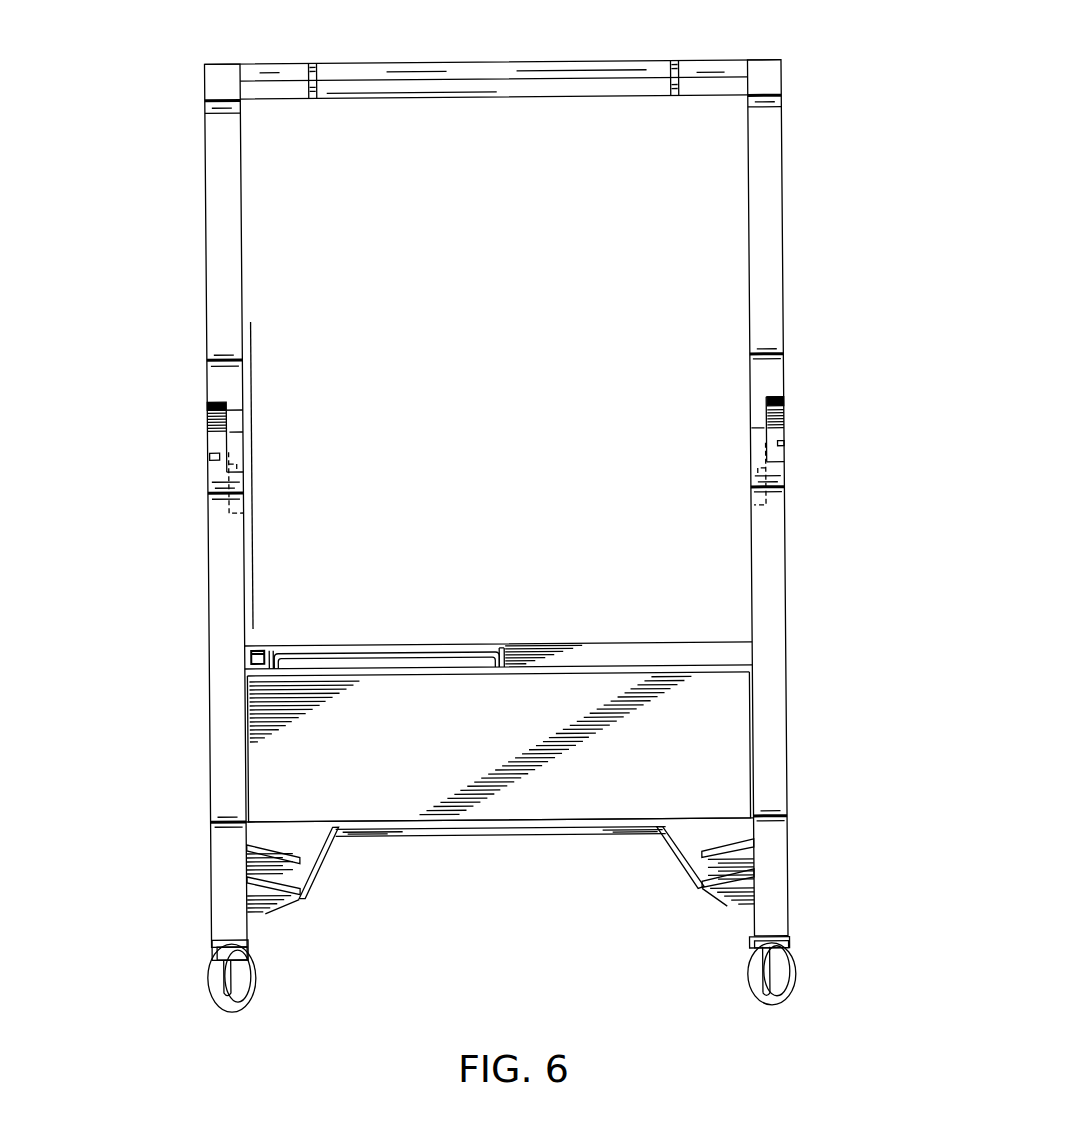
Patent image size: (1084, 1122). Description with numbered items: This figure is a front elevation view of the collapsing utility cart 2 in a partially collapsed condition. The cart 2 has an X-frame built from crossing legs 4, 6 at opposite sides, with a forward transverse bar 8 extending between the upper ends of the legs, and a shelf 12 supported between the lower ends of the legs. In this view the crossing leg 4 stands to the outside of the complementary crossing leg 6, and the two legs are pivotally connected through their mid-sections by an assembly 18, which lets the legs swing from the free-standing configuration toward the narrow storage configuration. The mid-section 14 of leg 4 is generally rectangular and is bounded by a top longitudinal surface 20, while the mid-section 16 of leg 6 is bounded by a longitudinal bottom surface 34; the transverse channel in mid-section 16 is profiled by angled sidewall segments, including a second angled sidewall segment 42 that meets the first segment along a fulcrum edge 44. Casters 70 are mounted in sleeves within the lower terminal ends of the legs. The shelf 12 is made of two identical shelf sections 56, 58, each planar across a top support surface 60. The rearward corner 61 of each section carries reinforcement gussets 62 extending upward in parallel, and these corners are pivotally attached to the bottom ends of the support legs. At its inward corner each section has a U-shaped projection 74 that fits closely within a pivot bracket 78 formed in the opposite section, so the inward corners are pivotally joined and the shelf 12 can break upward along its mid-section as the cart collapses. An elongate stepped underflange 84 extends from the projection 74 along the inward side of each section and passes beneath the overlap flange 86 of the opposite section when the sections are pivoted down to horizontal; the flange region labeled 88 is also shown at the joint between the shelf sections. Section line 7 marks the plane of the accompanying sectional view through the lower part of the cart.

The collapsing utility cart 2 is at (176, 399).
The crossing leg 4 is at (207, 592).
The crossing leg 6 is at (206, 164).
The section line 7- 7 is at (252, 318).
The forward transverse bar 8 is at (574, 62).
The shelf 12 is at (550, 836).
The mid-section of leg 4 14 is at (207, 483).
The mid-section of leg 6 16 is at (244, 415).
The pivot assembly 18 is at (243, 453).
The top longitudinal surface 20 is at (211, 451).
The longitudinal bottom surface 34 is at (238, 430).
The second angled sidewall segment 42 is at (213, 400).
The fulcrum edge 44 is at (208, 428).
The shelf section 56 is at (455, 836).
The shelf section 58 is at (394, 643).
The top support surface 60 is at (733, 737).
The rearward corner 61 is at (318, 844).
The reinforcement gusset 62 is at (259, 886).
The caster 70 is at (771, 1005).
The U-shaped projection 74 is at (254, 663).
The pivot bracket 78 is at (252, 650).
The stepped underflange 84 is at (414, 655).
The overlap flange 86 is at (359, 643).
The flange 88 is at (398, 674).